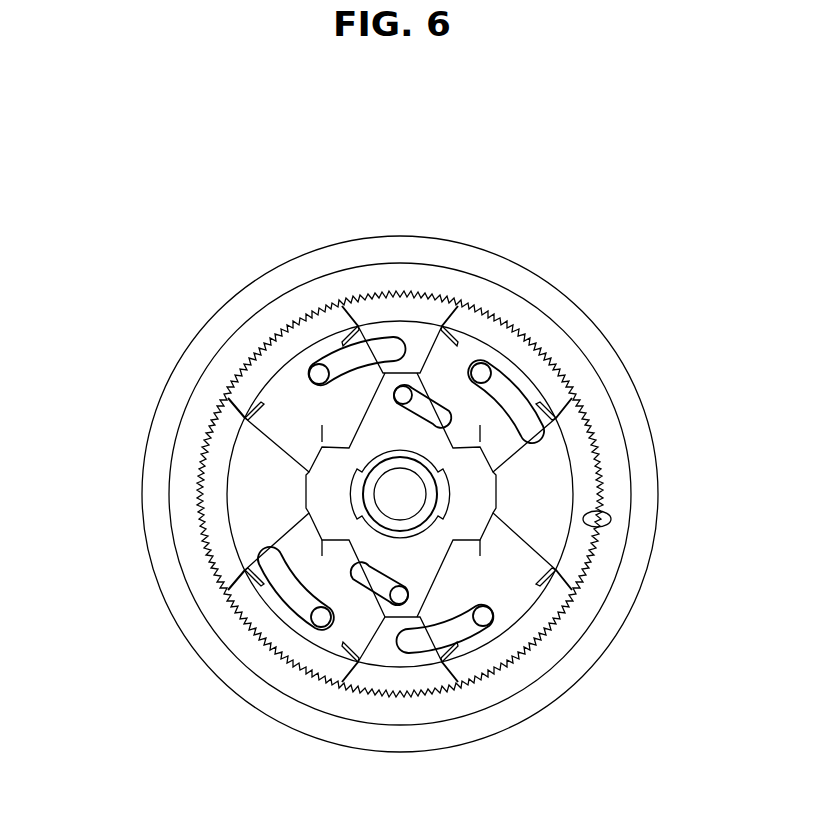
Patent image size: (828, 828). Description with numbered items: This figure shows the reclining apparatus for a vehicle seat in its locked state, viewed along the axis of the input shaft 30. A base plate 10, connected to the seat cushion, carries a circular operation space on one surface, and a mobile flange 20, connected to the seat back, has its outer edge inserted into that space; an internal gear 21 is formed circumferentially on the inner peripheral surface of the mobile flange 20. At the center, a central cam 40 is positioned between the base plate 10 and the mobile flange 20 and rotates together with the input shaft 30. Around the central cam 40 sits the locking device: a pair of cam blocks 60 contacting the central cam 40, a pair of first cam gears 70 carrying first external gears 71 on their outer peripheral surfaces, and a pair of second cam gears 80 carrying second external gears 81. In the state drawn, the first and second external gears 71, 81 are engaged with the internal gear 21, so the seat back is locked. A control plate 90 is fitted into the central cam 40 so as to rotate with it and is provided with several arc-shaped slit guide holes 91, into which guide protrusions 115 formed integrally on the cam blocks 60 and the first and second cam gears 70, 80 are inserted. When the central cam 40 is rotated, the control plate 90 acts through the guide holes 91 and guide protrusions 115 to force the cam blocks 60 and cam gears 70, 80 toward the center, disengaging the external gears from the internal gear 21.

The base plate 10 is at (157, 460).
The mobile flange 20 is at (183, 524).
The internal gear 21 is at (607, 510).
The input shaft 30 is at (397, 496).
The central cam 40 is at (430, 533).
The cam blocks 60 is at (401, 396).
The first cam gears 70 is at (262, 365).
The first external gears 71 is at (318, 305).
The second cam gears 80 is at (550, 393).
The second external gears 81 is at (484, 363).
The control plate 90 is at (560, 462).
The guide holes 91 is at (352, 352).
The guide protrusions 115 is at (257, 370).